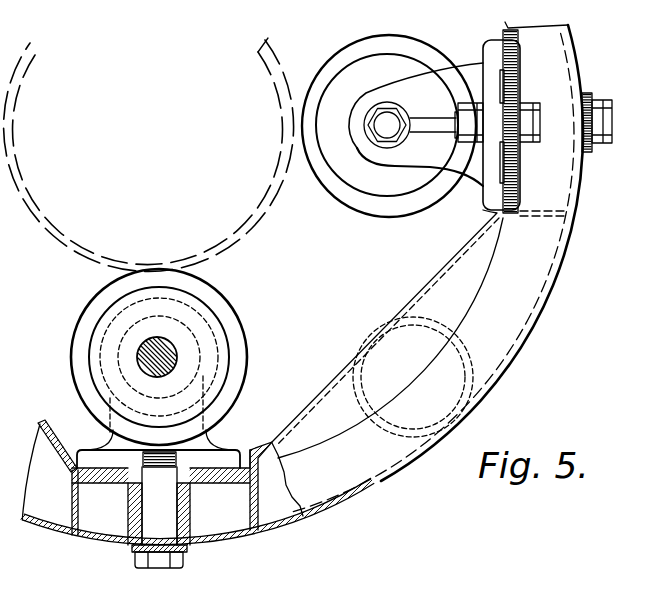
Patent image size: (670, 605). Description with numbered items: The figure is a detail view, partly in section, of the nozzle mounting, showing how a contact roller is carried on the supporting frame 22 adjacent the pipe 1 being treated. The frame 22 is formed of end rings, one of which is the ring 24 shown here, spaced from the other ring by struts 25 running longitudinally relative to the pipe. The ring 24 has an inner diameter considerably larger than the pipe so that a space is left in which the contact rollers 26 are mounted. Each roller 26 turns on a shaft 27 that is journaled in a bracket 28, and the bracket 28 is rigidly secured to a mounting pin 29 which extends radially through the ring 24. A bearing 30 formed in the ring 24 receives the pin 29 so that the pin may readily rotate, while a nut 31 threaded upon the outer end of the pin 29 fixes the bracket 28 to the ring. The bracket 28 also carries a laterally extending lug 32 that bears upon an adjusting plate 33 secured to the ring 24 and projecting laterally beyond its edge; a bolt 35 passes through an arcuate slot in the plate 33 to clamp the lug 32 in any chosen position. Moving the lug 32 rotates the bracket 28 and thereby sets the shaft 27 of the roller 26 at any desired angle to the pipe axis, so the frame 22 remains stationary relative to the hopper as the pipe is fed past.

The wheel 1 is at (48, 194).
The frame 22 is at (570, 238).
The ring 24 is at (525, 293).
The struts 25 is at (472, 353).
The contact rollers 26 is at (380, 207).
The shaft 27 is at (388, 125).
The bracket 28 is at (423, 158).
The mounting pin 29 is at (613, 125).
The bearing 30 is at (190, 520).
The nut 31 is at (600, 142).
The lug 32 is at (490, 128).
The adjusting plate 33 is at (506, 48).
The bolt 35 is at (467, 103).